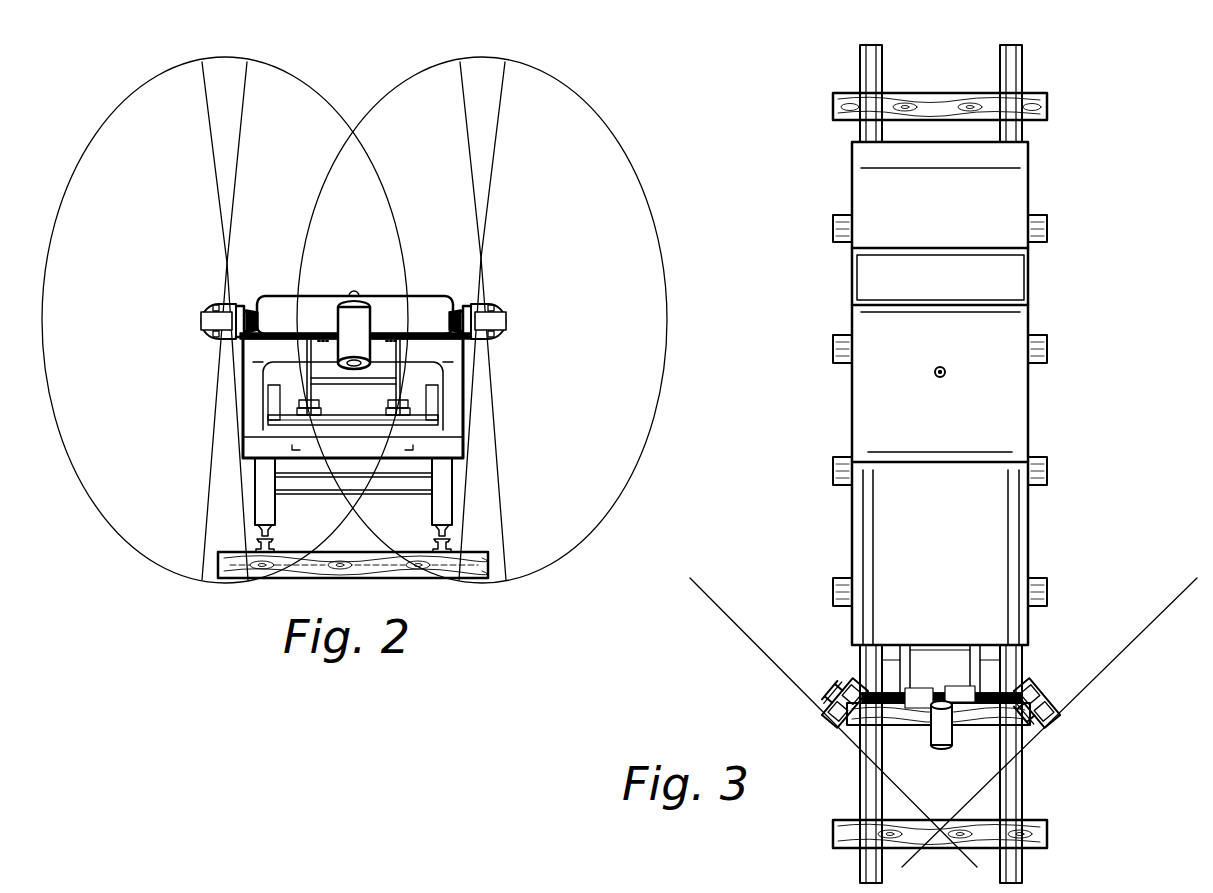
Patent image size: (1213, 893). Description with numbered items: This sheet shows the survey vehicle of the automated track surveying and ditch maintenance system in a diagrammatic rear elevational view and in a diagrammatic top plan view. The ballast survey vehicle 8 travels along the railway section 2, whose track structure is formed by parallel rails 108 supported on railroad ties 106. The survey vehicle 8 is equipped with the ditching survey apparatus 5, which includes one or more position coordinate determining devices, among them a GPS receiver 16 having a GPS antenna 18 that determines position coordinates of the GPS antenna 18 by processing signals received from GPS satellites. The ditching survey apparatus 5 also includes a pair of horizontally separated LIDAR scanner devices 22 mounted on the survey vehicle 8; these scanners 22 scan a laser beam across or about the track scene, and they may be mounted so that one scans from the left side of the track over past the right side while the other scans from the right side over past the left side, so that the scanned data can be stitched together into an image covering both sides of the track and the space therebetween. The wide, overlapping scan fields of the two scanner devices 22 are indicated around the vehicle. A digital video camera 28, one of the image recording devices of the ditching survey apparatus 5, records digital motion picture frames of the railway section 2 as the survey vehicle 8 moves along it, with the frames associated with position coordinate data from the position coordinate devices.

In FIG. 2, the railway section 2 is at (333, 581).
In FIG. 3, the railway section 2 is at (942, 460).
In FIG. 2, the ditching survey apparatus 5 is at (178, 240).
In FIG. 3, the ditching survey apparatus 5 is at (1048, 766).
In FIG. 2, the ballast survey vehicle 8 is at (232, 413).
In FIG. 3, the ballast survey vehicle 8 is at (846, 416).
In FIG. 3, the GPS receiver 16 is at (974, 348).
In FIG. 3, the GPS antenna 18 is at (944, 368).
In FIG. 2, the LIDAR scanner device 22 is at (205, 322).
In FIG. 3, the LIDAR scanner device 22 is at (826, 727).
In FIG. 2, the digital video camera 28 is at (357, 330).
In FIG. 3, the digital video camera 28 is at (945, 740).
In FIG. 2, the railroad tie 106 is at (228, 565).
In FIG. 3, the railroad tie 106 is at (1048, 105).
In FIG. 2, the rail 108 is at (254, 537).
In FIG. 3, the rail 108 is at (1000, 82).